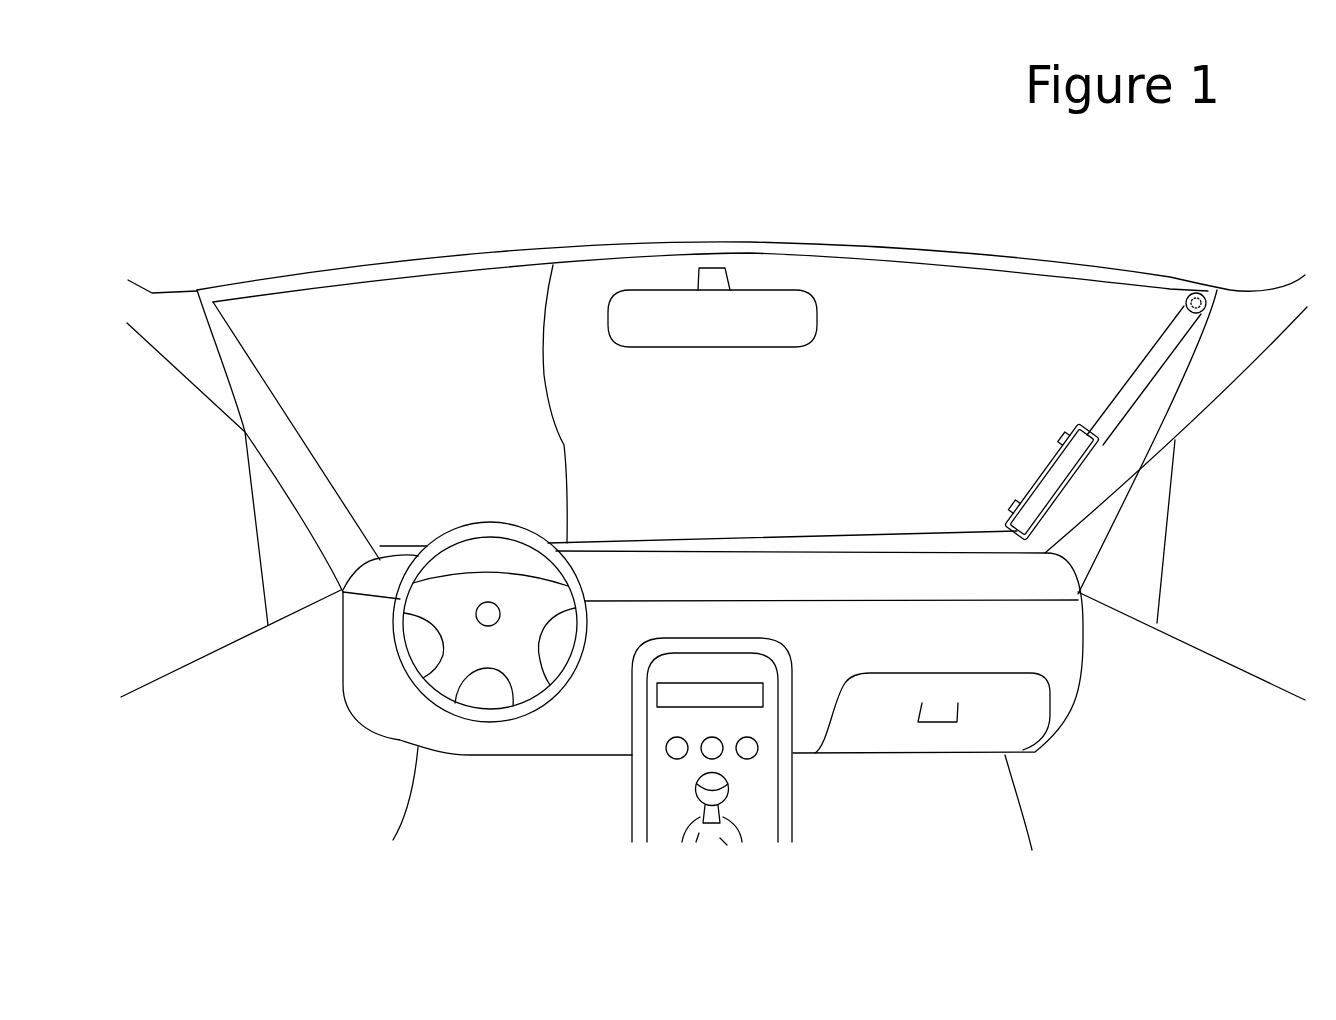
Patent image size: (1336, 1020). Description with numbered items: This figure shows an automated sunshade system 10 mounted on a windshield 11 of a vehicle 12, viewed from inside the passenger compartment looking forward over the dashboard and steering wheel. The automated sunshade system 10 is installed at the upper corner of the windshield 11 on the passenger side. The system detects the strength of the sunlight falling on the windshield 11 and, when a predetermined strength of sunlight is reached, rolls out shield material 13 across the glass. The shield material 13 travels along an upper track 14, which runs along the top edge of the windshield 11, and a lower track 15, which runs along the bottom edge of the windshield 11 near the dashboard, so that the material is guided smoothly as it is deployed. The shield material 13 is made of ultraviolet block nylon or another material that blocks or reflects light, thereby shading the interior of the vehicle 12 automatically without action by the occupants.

The automated sunshade system 10 is at (1122, 420).
The windshield 11 is at (1210, 297).
The vehicle 12 is at (218, 525).
The shield material 13 is at (577, 305).
The upper track 14 is at (377, 282).
The lower track 15 is at (405, 547).